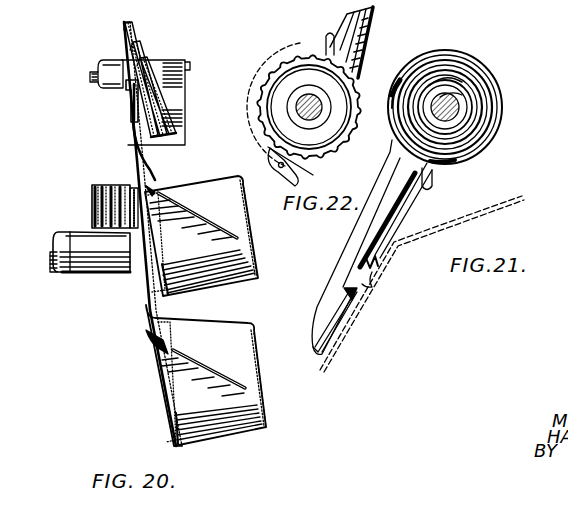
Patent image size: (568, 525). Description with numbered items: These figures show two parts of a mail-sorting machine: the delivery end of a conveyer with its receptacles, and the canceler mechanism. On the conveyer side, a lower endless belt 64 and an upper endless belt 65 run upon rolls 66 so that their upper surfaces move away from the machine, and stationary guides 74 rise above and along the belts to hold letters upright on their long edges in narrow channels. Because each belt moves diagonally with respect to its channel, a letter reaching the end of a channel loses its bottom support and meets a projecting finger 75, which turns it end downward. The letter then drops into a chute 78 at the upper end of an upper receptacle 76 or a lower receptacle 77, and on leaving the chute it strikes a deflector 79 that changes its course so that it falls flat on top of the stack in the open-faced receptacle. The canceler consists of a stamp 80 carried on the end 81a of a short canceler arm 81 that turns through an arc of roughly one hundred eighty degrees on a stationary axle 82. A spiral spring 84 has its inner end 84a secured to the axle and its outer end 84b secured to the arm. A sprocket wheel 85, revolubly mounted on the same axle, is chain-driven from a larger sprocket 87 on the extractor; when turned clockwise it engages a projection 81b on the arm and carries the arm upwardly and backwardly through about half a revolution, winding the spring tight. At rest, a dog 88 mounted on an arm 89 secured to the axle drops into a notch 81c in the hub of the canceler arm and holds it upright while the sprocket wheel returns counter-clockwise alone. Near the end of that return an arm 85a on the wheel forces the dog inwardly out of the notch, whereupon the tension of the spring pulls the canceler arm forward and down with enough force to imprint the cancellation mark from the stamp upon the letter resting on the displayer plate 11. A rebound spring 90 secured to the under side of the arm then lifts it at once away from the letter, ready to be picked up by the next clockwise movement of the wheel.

In FIG. 21, the displayer plate 11 is at (372, 285).
In FIG. 20, the lower endless belt 64 is at (90, 253).
In FIG. 20, the upper endless belt 65 is at (178, 105).
In FIG. 20, the rolls 66 is at (95, 84).
In FIG. 20, the stationary guides 74 is at (143, 44).
In FIG. 20, the projecting finger 75 is at (127, 106).
In FIG. 20, the upper receptacle 76 is at (201, 236).
In FIG. 20, the lower receptacle 77 is at (206, 375).
In FIG. 20, the chute 78 is at (122, 150).
In FIG. 20, the deflector 79 is at (148, 193).
In FIG. 21, the stamp 80 is at (337, 324).
In FIG. 21, the canceler arm 81 is at (362, 229).
In FIG. 21, the end of arm 81a is at (352, 296).
In FIG. 22, the projection 81b is at (334, 49).
In FIG. 21, the projection 81b is at (425, 200).
In FIG. 22, the notch 81c is at (273, 158).
In FIG. 21, the notch 81c is at (458, 62).
In FIG. 22, the stationary axle 82 is at (307, 105).
In FIG. 21, the stationary axle 82 is at (458, 110).
In FIG. 21, the spiral spring 84 is at (470, 93).
In FIG. 21, the inner end of spiral spring 84a is at (453, 85).
In FIG. 21, the outer end of spiral spring 84b is at (394, 76).
In FIG. 22, the sprocket wheel 85 is at (313, 107).
In FIG. 22, the arm on sprocket wheel 85a is at (324, 45).
In FIG. 21, the arm on sprocket wheel 85a is at (434, 181).
In FIG. 22, the sprocket 87 is at (299, 4).
In FIG. 22, the dog 88 is at (281, 172).
In FIG. 22, the arm 89 is at (302, 169).
In FIG. 21, the rebound spring 90 is at (385, 262).